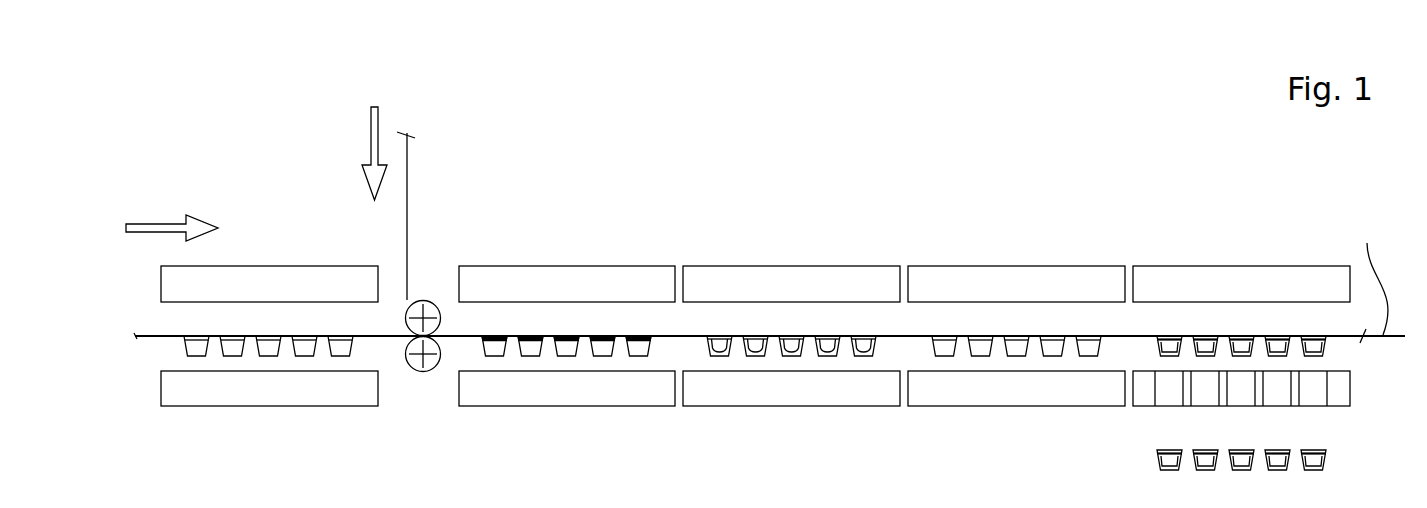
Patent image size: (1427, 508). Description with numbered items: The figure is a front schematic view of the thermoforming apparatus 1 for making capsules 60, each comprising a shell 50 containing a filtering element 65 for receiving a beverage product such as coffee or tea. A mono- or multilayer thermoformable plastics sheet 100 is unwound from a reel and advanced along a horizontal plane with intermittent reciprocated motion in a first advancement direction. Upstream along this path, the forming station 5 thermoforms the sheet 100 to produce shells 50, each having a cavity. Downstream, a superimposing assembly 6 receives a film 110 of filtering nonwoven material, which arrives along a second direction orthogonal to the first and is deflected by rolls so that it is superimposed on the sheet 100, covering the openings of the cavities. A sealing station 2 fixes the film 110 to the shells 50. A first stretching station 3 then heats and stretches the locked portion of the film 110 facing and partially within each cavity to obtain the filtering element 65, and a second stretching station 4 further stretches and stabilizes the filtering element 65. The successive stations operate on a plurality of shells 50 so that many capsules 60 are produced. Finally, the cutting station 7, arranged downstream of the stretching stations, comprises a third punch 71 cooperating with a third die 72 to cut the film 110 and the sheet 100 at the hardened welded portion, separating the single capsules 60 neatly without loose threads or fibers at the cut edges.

The thermoforming apparatus 1 is at (206, 130).
The sealing station 2 is at (570, 228).
The first stretching station 3 is at (777, 228).
The second stretching station 4 is at (1016, 228).
The forming station 5 is at (283, 224).
The superimposing assembly 6 is at (422, 258).
The cutting station 7 is at (1241, 265).
The shell 50 is at (530, 404).
The capsule 60 is at (1157, 463).
The filtering element 65 is at (792, 343).
The third punch 71 is at (1300, 278).
The third die 72 is at (1168, 383).
The thermoformable plastics sheet 100 is at (160, 338).
The filtering film 110 is at (442, 186).